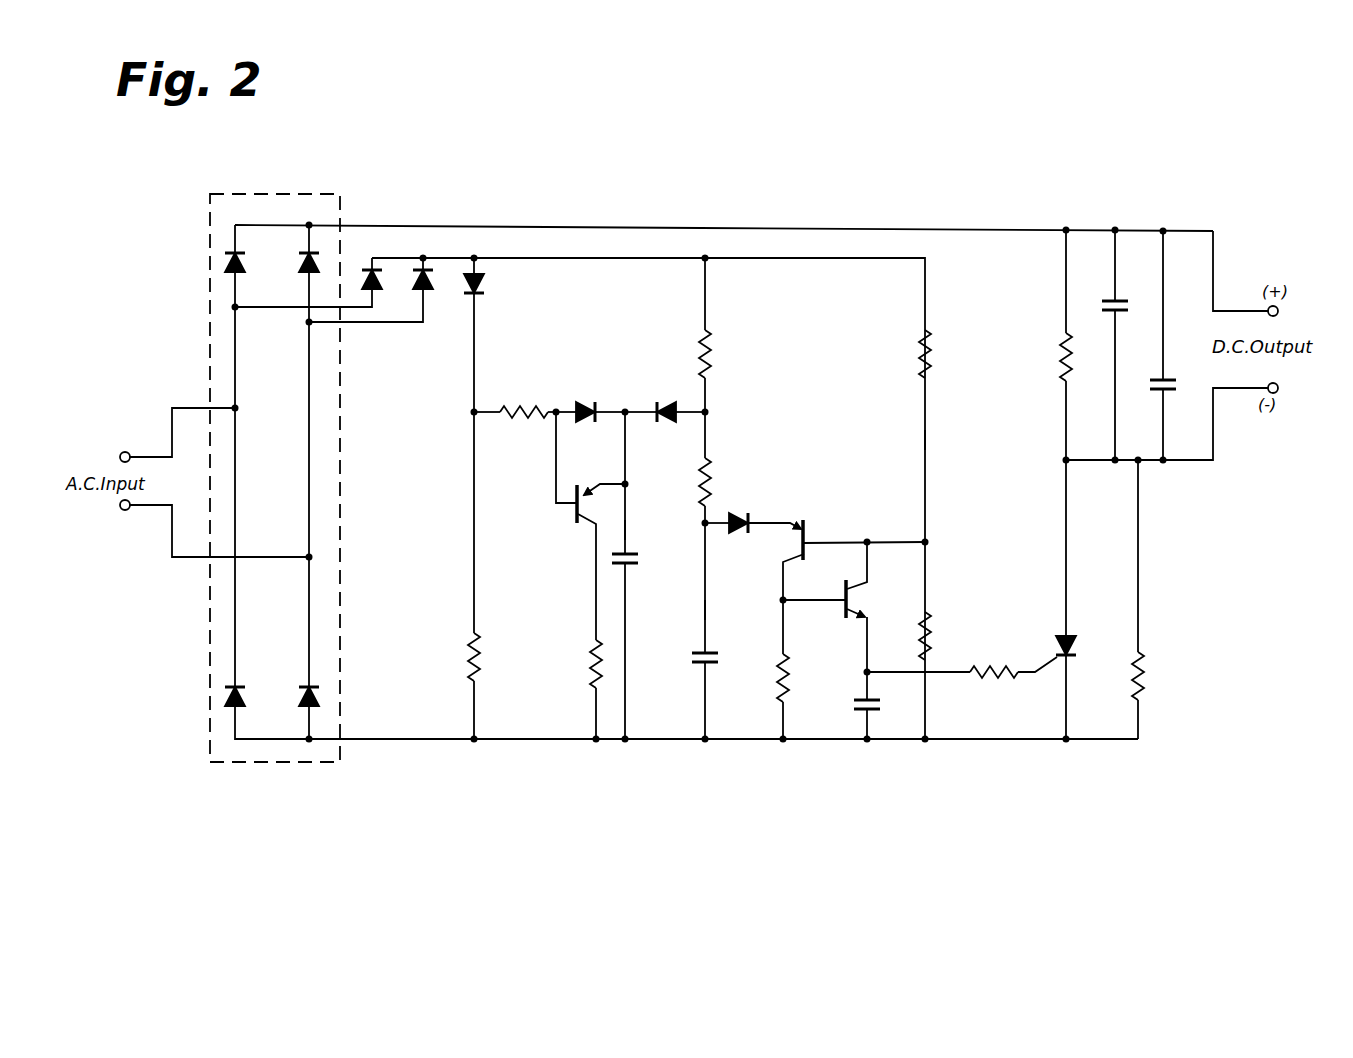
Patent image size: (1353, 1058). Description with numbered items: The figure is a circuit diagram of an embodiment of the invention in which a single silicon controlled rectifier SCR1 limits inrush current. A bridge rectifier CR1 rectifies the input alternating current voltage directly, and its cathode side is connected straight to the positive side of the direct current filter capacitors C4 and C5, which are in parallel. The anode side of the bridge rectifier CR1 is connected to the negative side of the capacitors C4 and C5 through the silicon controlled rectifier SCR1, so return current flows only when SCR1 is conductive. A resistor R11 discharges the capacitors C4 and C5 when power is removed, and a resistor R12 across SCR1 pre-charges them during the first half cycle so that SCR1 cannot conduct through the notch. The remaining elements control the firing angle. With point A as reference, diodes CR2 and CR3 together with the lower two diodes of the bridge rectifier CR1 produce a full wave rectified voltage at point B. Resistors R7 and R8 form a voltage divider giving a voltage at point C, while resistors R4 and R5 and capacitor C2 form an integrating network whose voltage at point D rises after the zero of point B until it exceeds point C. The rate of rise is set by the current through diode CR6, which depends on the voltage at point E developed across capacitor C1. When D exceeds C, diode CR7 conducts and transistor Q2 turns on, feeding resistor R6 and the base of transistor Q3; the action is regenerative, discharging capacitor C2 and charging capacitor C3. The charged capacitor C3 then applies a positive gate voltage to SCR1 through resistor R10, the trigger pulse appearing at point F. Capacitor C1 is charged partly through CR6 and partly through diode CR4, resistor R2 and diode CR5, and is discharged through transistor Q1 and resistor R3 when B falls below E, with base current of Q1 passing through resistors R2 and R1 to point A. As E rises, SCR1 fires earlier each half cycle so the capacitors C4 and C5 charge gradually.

The bridge rectifier CR1 is at (275, 519).
The diode CR2 is at (386, 280).
The diode CR3 is at (440, 285).
The diode CR4 is at (484, 280).
The diode CR5 is at (584, 403).
The diode CR6 is at (682, 410).
The diode CR7 is at (733, 518).
The resistor R1 is at (468, 655).
The resistor R2 is at (540, 406).
The resistor R3 is at (592, 666).
The resistor R4 is at (712, 352).
The resistor R5 is at (712, 480).
The resistor R6 is at (790, 672).
The resistor R7 is at (932, 352).
The resistor R8 is at (928, 634).
The resistor R10 is at (975, 682).
The resistor R11 is at (1062, 369).
The resistor R12 is at (1145, 681).
The capacitor C1 is at (638, 566).
The capacitor C2 is at (716, 666).
The capacitor C3 is at (882, 713).
The filter capacitor C4 is at (1122, 316).
The filter capacitor C5 is at (1172, 397).
The transistor Q1 is at (577, 516).
The transistor Q2 is at (808, 529).
The transistor Q3 is at (848, 584).
The silicon controlled rectifier SCR1 is at (1072, 645).
The reference point A is at (658, 744).
The point B is at (603, 262).
The point C is at (930, 439).
The point D is at (710, 607).
The point E is at (629, 529).
The point F is at (948, 667).